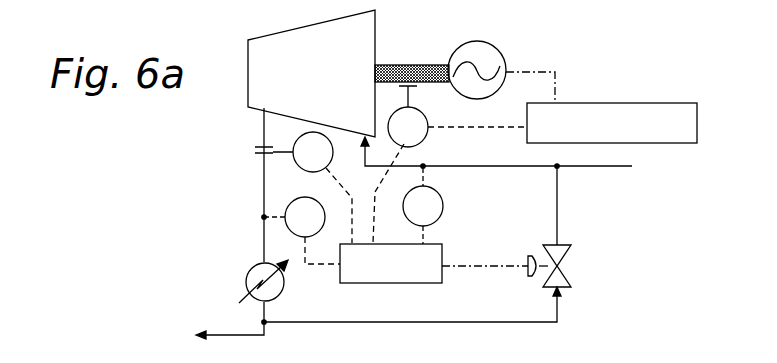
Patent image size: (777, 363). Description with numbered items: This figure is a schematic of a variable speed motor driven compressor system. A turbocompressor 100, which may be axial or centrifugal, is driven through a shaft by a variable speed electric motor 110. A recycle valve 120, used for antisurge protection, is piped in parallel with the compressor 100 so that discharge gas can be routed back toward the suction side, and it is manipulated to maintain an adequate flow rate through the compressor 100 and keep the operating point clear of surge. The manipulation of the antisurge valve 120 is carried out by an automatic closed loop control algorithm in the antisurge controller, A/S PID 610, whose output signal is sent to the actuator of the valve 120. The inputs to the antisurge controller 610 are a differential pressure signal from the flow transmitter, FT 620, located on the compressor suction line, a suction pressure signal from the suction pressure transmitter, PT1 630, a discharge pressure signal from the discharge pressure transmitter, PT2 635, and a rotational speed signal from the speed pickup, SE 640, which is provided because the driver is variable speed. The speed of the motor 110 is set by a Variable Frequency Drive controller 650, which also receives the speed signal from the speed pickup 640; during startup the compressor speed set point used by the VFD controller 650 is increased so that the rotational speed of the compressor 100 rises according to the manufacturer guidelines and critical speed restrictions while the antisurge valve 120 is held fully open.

The turbocompressor 100 is at (320, 107).
The variable speed electric motor 110 is at (493, 55).
The recycle valve 120 is at (562, 256).
The antisurge controller 610 is at (438, 247).
The flow transmitter 620 is at (300, 166).
The suction pressure transmitter 630 is at (442, 218).
The discharge pressure transmitter 635 is at (283, 226).
The speed pickup 640 is at (429, 126).
The Variable Frequency Drive controller 650 is at (597, 110).